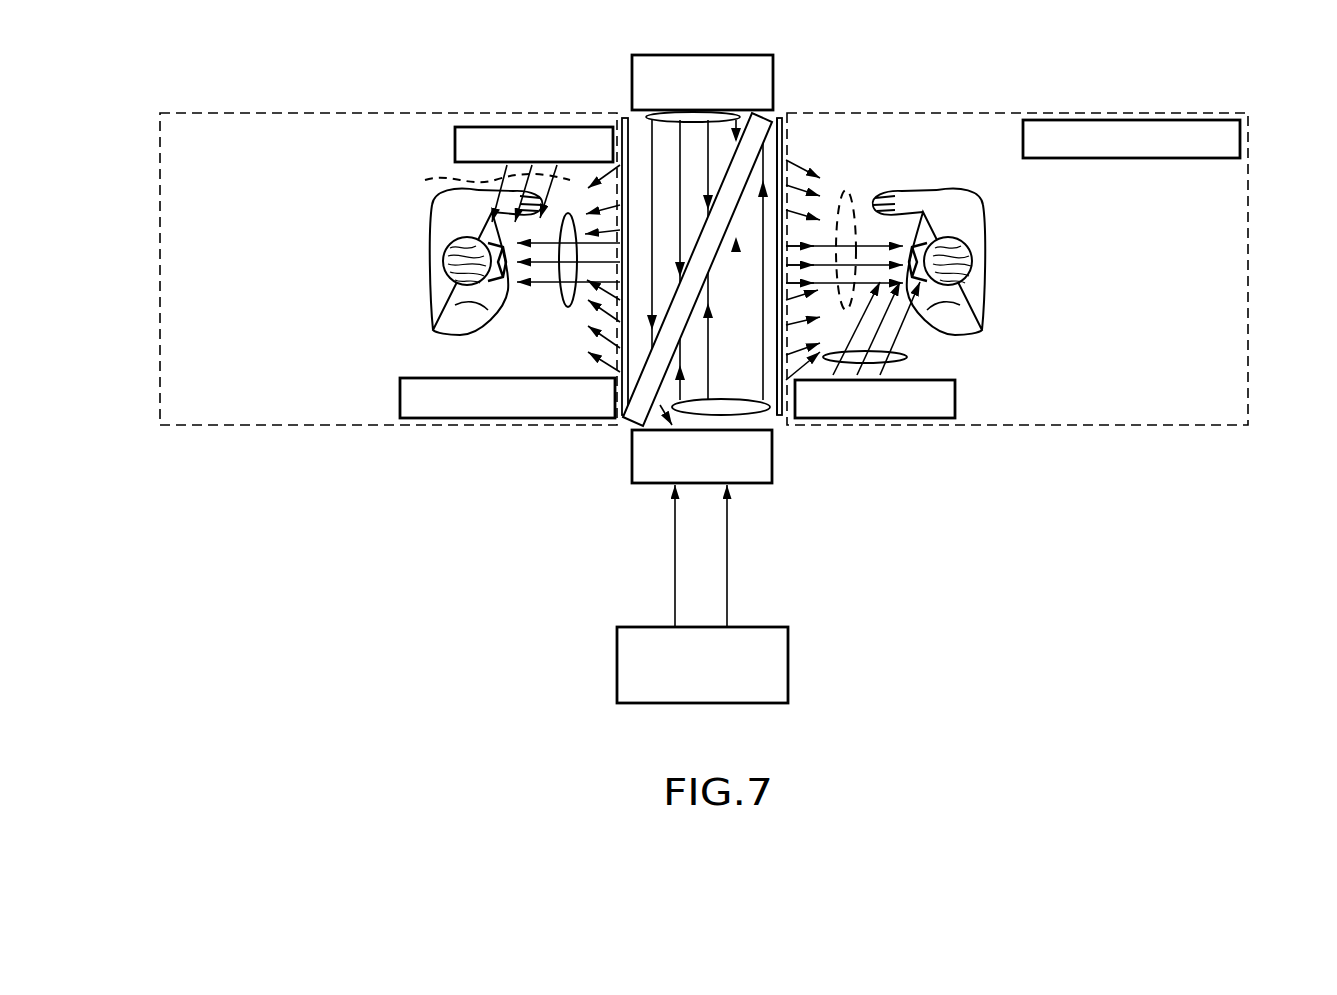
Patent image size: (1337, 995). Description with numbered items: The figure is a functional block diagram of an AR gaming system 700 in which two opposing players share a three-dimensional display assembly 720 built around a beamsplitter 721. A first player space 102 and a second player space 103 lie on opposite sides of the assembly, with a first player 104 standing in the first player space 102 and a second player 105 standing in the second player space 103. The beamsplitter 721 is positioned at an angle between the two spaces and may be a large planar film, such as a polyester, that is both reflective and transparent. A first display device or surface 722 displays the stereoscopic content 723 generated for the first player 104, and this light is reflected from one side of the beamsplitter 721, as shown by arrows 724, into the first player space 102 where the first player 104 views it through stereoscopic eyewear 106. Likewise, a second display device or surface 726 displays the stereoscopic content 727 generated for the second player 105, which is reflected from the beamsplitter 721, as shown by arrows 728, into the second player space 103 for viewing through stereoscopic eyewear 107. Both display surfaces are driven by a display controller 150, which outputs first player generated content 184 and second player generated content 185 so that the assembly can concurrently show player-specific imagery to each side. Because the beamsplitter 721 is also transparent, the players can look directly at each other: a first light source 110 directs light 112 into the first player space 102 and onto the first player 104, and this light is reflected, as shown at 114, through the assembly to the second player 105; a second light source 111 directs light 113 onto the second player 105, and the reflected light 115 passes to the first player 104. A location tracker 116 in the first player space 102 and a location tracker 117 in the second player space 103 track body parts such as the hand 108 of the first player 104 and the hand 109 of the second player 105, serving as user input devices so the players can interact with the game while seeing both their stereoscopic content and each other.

The AR gaming system 700 is at (146, 152).
The first player space 102 is at (158, 222).
The second player space 103 is at (1249, 180).
The 3D display assembly 720 is at (794, 50).
The first display device or surface 722 is at (773, 58).
The beamsplitter 721 is at (775, 118).
The 3D content generated for the first player 723 is at (645, 117).
The first light source 110 is at (455, 145).
The light from first light source 112 is at (479, 179).
The hand 108 is at (470, 200).
The first player 104 is at (432, 290).
The 3D eyewear 106 is at (498, 272).
The reflected light from second player 115 is at (580, 222).
The location tracker 116 is at (400, 396).
The hand 109 is at (885, 192).
The 3D eyewear 107 is at (973, 212).
The second player 105 is at (985, 217).
The reflected light from first player 114 is at (842, 239).
The light from second light source 113 is at (905, 356).
The second light source 111 is at (955, 400).
The location tracker 117 is at (1174, 160).
The arrows showing reflected first player content 724 is at (623, 416).
The second display device or surface 726 is at (632, 460).
The 3D content generated for the second player 727 is at (778, 423).
The arrows showing reflected second player content 728 is at (772, 410).
The first player generated 3D content 184 is at (677, 573).
The second player generated 3D content 185 is at (723, 565).
The display controller 150 is at (617, 665).